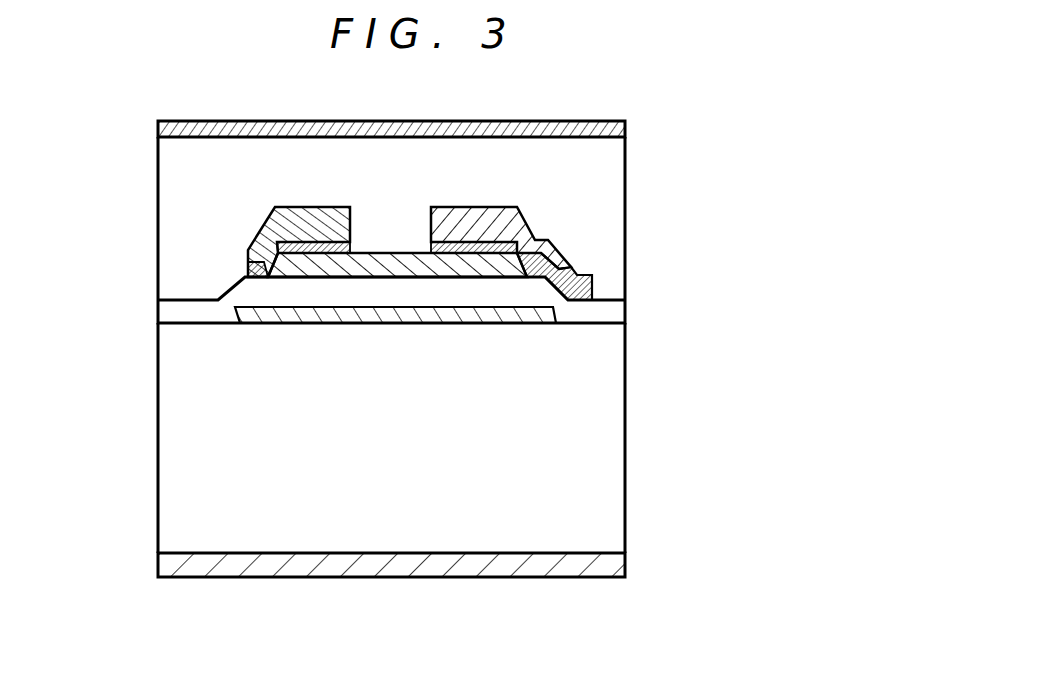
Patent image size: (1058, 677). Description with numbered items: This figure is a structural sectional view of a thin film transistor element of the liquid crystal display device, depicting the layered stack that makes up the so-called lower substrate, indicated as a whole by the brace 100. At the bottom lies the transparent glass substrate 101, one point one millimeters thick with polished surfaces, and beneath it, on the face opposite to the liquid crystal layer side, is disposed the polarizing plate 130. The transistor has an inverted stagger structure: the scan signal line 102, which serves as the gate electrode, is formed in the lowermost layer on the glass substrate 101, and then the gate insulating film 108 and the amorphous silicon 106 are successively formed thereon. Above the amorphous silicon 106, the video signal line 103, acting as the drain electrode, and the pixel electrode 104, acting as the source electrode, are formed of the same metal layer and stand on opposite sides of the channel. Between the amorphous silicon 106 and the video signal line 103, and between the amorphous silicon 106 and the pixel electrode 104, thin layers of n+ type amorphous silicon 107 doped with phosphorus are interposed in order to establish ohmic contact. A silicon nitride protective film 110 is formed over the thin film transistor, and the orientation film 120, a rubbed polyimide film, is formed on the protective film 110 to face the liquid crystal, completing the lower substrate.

The thin film transistor device 100 is at (750, 117).
The transparent glass substrate 101 is at (620, 408).
The scan signal line 102 is at (392, 323).
The video signal line 103 is at (258, 225).
The pixel electrode 104 is at (575, 271).
The amorphous silicon 106 is at (383, 257).
The n+ type amorphous silicon 107 is at (247, 273).
The gate insulating film 108 is at (620, 315).
The protective film 110 is at (617, 167).
The orientation film 120 is at (627, 125).
The polarizing plate 130 is at (620, 565).